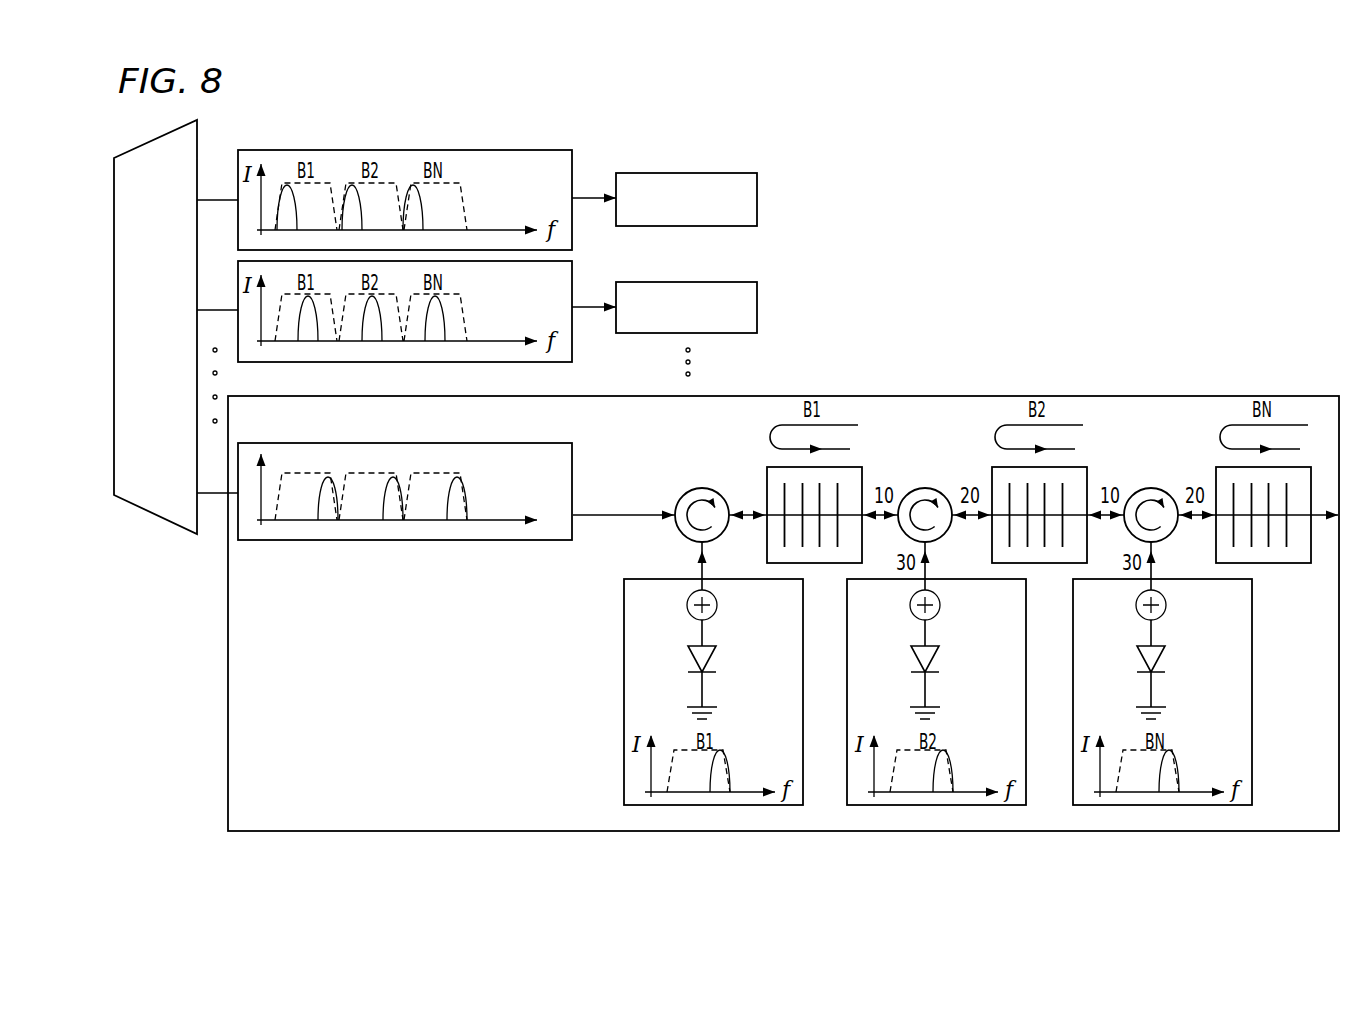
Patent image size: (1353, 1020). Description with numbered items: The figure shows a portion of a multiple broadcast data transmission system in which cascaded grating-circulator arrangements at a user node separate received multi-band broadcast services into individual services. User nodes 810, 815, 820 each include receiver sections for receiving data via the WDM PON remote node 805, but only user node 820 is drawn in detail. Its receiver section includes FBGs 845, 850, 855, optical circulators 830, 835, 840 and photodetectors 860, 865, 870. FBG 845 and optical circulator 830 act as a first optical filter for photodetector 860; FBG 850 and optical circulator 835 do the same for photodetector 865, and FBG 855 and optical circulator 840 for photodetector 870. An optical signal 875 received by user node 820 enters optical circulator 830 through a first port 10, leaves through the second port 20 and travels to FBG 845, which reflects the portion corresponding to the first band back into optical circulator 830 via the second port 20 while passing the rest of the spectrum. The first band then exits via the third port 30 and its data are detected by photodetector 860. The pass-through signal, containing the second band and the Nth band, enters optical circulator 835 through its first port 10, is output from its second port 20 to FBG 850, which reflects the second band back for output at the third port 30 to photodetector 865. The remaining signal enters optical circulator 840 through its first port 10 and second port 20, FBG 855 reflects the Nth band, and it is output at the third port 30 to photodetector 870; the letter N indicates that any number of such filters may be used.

The WDM PON remote node 805 is at (155, 514).
The user node 810 is at (757, 198).
The user node 815 is at (757, 303).
The user node 820 is at (1005, 396).
The optical circulator 830 is at (703, 488).
The optical circulator 835 is at (926, 488).
The optical circulator 840 is at (1152, 488).
The FBG 845 is at (820, 563).
The FBG 850 is at (1043, 563).
The FBG 855 is at (1282, 563).
The photodetector 860 is at (687, 605).
The photodetector 865 is at (910, 605).
The photodetector 870 is at (1136, 605).
The optical signal 875 is at (437, 540).
The first port 10 is at (624, 501).
The second port 20 is at (748, 501).
The third port 30 is at (690, 566).